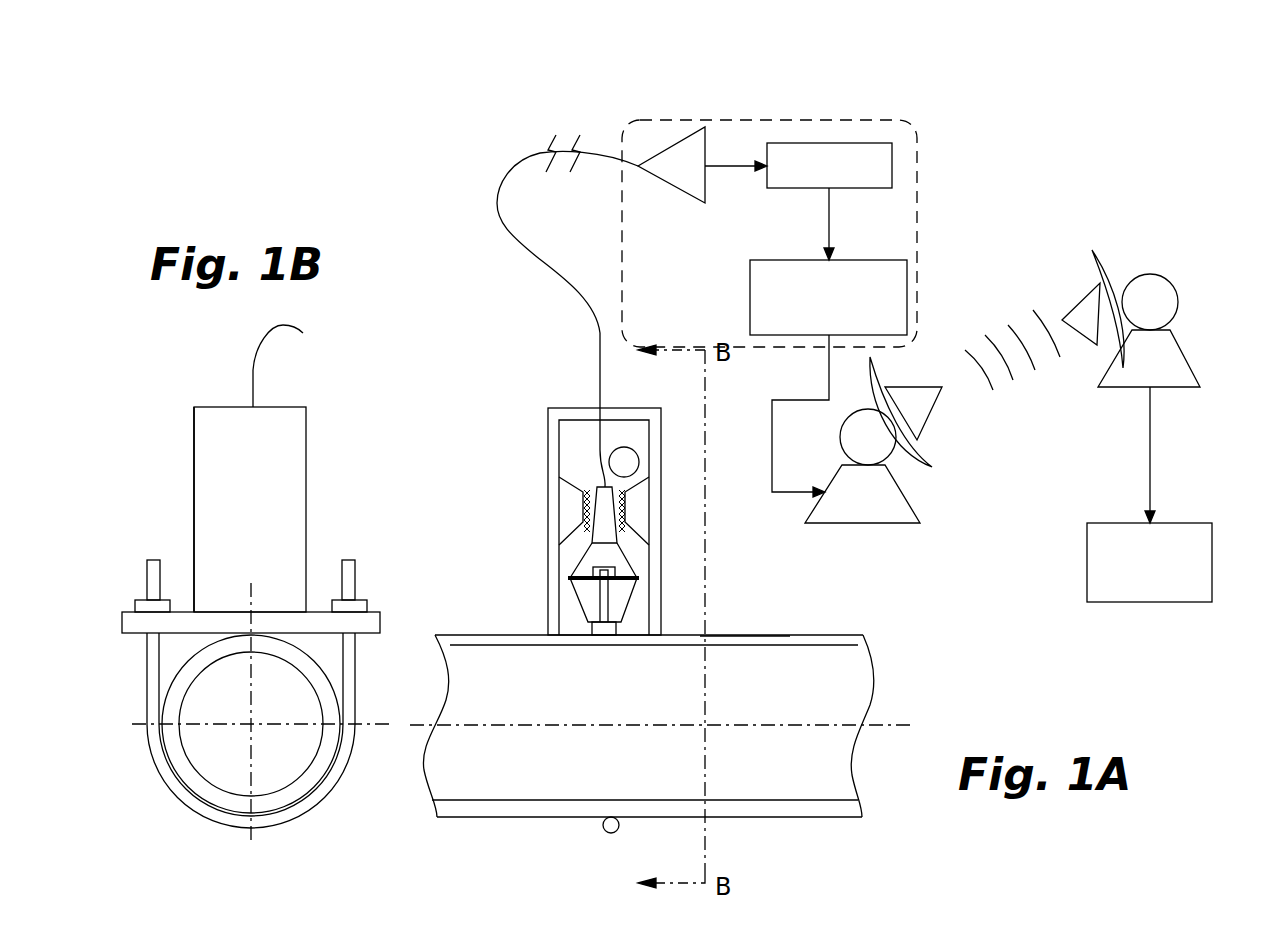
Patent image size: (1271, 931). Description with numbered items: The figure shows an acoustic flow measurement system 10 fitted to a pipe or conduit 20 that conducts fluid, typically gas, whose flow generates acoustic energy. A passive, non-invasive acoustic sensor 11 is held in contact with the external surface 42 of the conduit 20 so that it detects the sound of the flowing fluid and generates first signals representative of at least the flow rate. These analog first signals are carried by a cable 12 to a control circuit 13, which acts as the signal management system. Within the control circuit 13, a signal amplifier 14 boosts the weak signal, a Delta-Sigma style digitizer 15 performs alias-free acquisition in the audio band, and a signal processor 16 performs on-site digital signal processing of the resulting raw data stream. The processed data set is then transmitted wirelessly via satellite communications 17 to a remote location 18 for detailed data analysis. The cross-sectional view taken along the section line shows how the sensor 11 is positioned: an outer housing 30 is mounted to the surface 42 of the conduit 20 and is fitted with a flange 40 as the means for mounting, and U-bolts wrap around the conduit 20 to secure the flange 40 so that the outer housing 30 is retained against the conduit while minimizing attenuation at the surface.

In FIG. 1A, the acoustic flow measurement system 10 is at (880, 75).
In FIG. 1A, the acoustic sensor 11 is at (548, 413).
In FIG. 1B, the acoustic sensor 11 is at (194, 460).
In FIG. 1A, the cable 12 is at (495, 200).
In FIG. 1B, the cable 12 is at (256, 357).
In FIG. 1A, the control circuit 13 is at (925, 195).
In FIG. 1A, the signal amplifier 14 is at (700, 130).
In FIG. 1A, the digitizer 15 is at (813, 150).
In FIG. 1A, the signal processor 16 is at (895, 287).
In FIG. 1A, the satellite communications 17 is at (1098, 388).
In FIG. 1A, the remote location 18 is at (1103, 577).
In FIG. 1A, the conduit 20 is at (811, 635).
In FIG. 1B, the conduit 20 is at (180, 767).
In FIG. 1B, the outer housing 30 is at (308, 513).
In FIG. 1B, the flange 40 is at (122, 610).
In FIG. 1A, the surface 42 is at (730, 635).